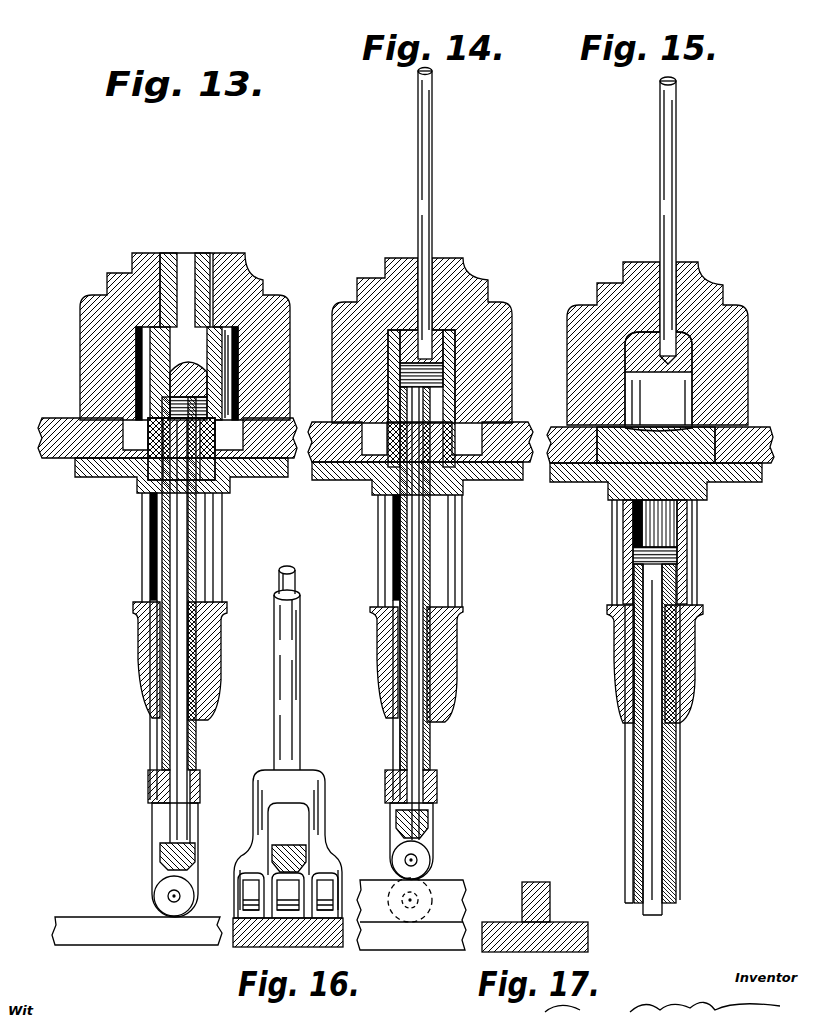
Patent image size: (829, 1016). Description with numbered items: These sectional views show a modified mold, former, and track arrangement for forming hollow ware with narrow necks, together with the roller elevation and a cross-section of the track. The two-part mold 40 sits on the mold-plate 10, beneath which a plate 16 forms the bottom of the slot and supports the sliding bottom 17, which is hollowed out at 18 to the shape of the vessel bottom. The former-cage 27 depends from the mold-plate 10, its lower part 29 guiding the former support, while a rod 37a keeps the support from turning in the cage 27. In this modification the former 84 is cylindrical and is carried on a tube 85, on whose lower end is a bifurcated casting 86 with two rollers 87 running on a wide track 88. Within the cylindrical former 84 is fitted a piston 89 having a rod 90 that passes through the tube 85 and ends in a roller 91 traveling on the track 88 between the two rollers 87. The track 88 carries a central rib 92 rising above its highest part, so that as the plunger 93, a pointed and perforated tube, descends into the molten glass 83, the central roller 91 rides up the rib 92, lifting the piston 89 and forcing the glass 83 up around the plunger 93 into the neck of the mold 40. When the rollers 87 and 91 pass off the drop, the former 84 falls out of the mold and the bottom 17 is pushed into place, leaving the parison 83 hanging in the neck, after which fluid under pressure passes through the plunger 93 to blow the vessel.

In FIG. 13, the mold-plate 10 is at (60, 453).
In FIG. 14, the mold-plate 10 is at (343, 466).
In FIG. 15, the mold-plate 10 is at (772, 446).
In FIG. 13, the plate 16 is at (98, 477).
In FIG. 14, the plate 16 is at (512, 480).
In FIG. 15, the sliding bottom 17 is at (620, 450).
In FIG. 15, the hollowed-out recess 18 is at (738, 484).
In FIG. 13, the former-cage 27 is at (145, 552).
In FIG. 14, the former-cage 27 is at (383, 538).
In FIG. 15, the former-cage 27 is at (617, 563).
In FIG. 13, the lower part of former-cage 29 is at (140, 666).
In FIG. 14, the lower part of former-cage 29 is at (458, 660).
In FIG. 15, the lower part of former-cage 29 is at (696, 665).
In FIG. 13, the rod 37a is at (158, 727).
In FIG. 14, the rod 37a is at (400, 737).
In FIG. 15, the rod 37a is at (634, 821).
In FIG. 13, the mold 40 is at (283, 306).
In FIG. 14, the mold 40 is at (340, 312).
In FIG. 15, the mold 40 is at (738, 317).
In FIG. 13, the molten glass 83 is at (197, 382).
In FIG. 14, the molten glass 83 is at (390, 341).
In FIG. 15, the molten glass 83 is at (678, 348).
In FIG. 13, the cylindrical former 84 is at (165, 357).
In FIG. 14, the cylindrical former 84 is at (456, 412).
In FIG. 15, the cylindrical former 84 is at (688, 519).
In FIG. 13, the tube 85 is at (198, 728).
In FIG. 16, the tube 85 is at (303, 668).
In FIG. 14, the tube 85 is at (433, 737).
In FIG. 15, the tube 85 is at (676, 786).
In FIG. 13, the bifurcated casting 86 is at (152, 822).
In FIG. 16, the bifurcated casting 86 is at (327, 796).
In FIG. 14, the bifurcated casting 86 is at (434, 815).
In FIG. 13, the rollers 87 is at (160, 906).
In FIG. 16, the rollers 87 is at (245, 950).
In FIG. 13, the track 88 is at (152, 942).
In FIG. 14, the track 88 is at (412, 944).
In FIG. 17, the track 88 is at (588, 938).
In FIG. 13, the piston 89 is at (165, 407).
In FIG. 14, the piston 89 is at (447, 377).
In FIG. 15, the piston 89 is at (687, 553).
In FIG. 16, the rod 90 is at (288, 565).
In FIG. 14, the rod 90 is at (416, 748).
In FIG. 15, the rod 90 is at (662, 908).
In FIG. 16, the roller 91 is at (278, 948).
In FIG. 14, the roller 91 is at (426, 870).
In FIG. 14, the central rib 92 is at (457, 892).
In FIG. 17, the central rib 92 is at (535, 882).
In FIG. 14, the plunger 93 is at (433, 148).
In FIG. 15, the plunger 93 is at (659, 178).